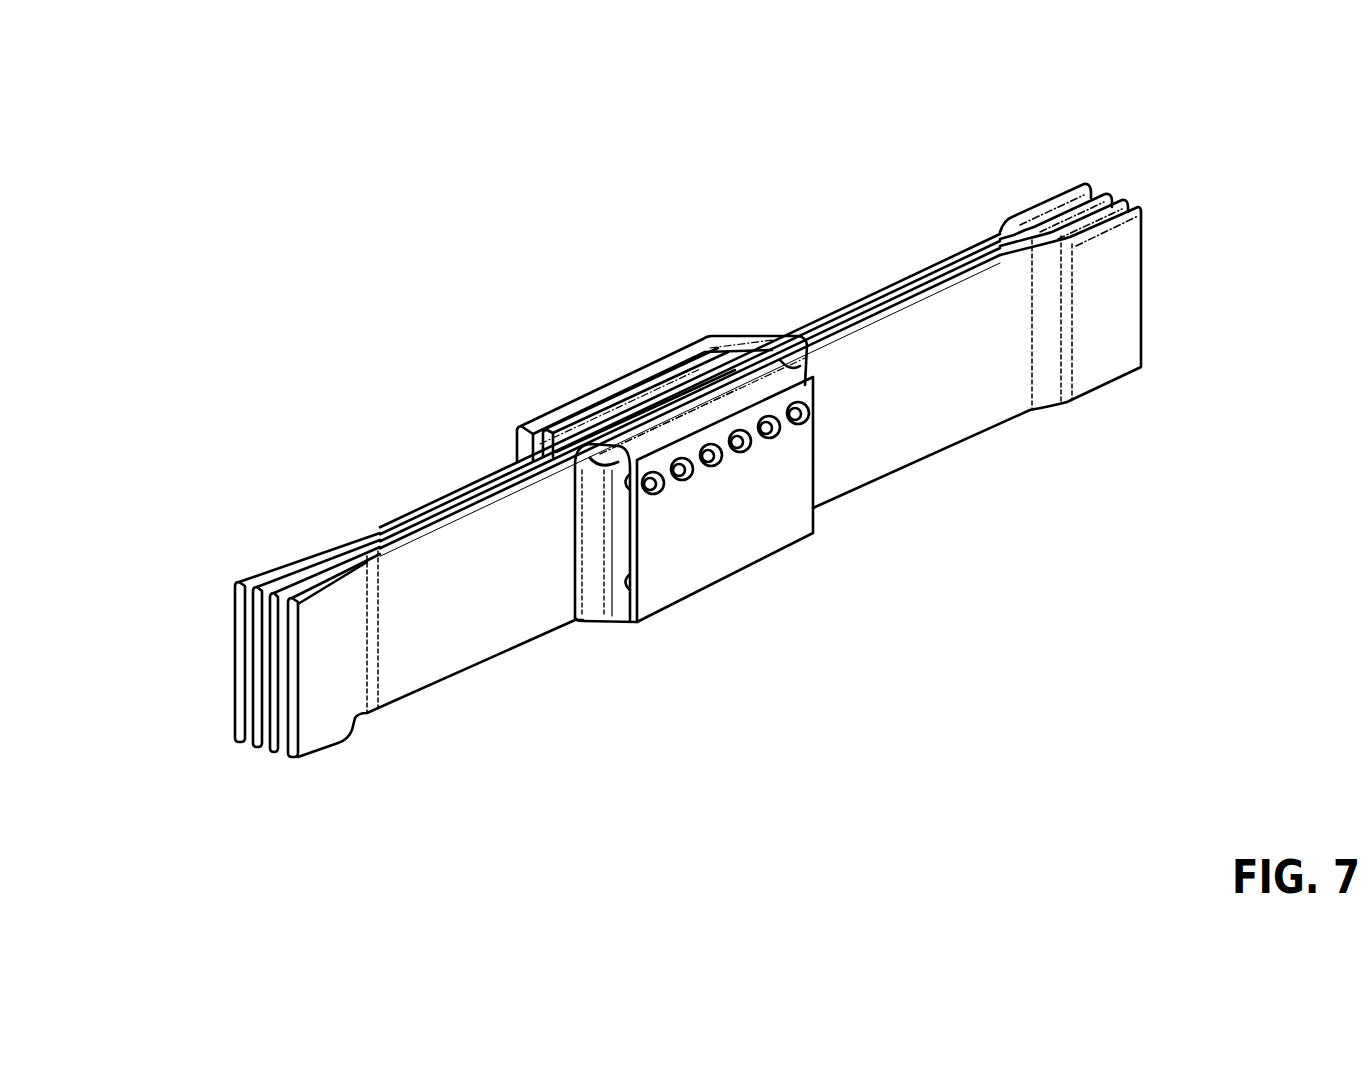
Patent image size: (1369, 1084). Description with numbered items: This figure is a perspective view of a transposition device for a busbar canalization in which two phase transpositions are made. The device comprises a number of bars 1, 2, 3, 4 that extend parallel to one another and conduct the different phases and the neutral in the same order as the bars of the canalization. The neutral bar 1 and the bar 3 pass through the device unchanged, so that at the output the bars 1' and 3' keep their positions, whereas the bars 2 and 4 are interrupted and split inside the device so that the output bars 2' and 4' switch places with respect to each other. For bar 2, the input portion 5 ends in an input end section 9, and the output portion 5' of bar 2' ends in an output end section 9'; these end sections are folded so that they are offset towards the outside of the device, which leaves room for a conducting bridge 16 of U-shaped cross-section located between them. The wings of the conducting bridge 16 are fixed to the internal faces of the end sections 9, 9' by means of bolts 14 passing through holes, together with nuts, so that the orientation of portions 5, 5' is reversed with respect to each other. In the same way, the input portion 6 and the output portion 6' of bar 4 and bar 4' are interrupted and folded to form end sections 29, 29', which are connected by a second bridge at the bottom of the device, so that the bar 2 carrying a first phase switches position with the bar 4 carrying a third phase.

The neutral bar 1 is at (245, 626).
The bar 2 is at (212, 643).
The bar 3 is at (221, 673).
The bar 4 is at (263, 724).
The input portion of bar 2 5 is at (440, 553).
The input portion of bar 4 6 is at (519, 478).
The input end section 9 is at (648, 328).
The bolts 14 is at (812, 412).
The conducting bridge 16 is at (793, 368).
The end section of bar 4 29 is at (619, 637).
The output neutral bar 1' is at (1073, 154).
The output bar 2' is at (1150, 231).
The output bar 3' is at (1149, 175).
The output bar 4' is at (1096, 168).
The output portion of bar 2' 5' is at (977, 427).
The output portion of bar 4' 6' is at (850, 283).
The output end section 9' is at (706, 540).
The end section of bar 4' 29' is at (662, 317).